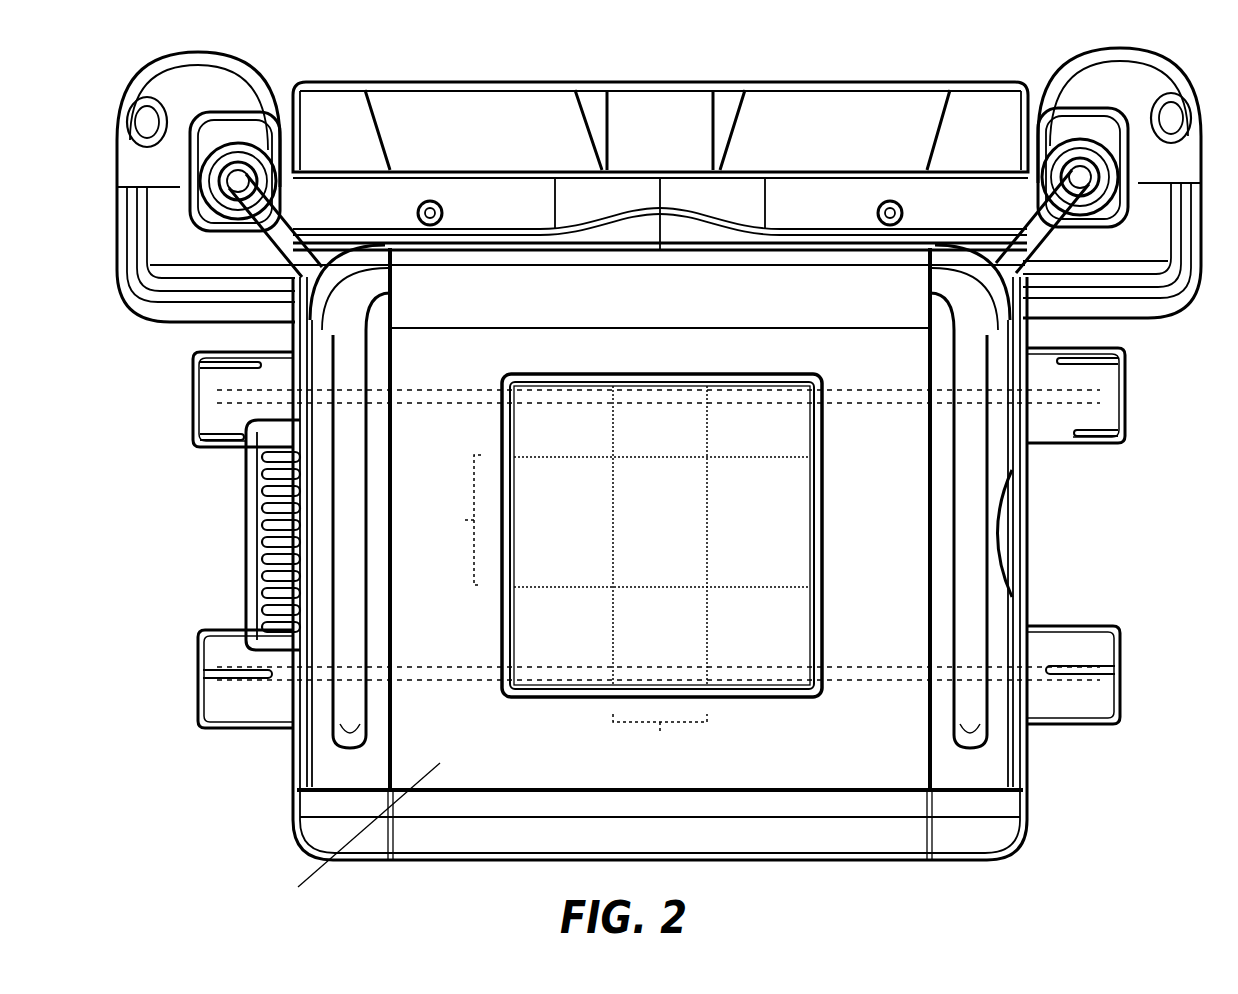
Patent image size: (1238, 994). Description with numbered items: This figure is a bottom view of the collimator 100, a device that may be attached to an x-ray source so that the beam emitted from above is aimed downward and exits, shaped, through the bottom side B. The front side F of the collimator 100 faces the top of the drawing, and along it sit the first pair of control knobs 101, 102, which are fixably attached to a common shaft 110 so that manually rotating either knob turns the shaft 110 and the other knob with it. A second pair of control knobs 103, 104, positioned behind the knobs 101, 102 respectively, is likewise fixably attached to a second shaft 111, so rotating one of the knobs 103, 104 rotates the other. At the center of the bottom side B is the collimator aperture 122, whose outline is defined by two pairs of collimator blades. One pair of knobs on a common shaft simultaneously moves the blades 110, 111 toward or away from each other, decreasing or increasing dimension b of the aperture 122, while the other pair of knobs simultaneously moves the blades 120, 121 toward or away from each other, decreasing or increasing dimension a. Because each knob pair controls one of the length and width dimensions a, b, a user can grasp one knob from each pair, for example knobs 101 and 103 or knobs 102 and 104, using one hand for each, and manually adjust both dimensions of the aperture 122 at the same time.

The collimator 100 is at (262, 800).
The control knob 101 is at (185, 370).
The control knob 102 is at (1136, 421).
The control knob 103 is at (207, 611).
The control knob 104 is at (1052, 610).
The shaft / collimator blade 110 is at (439, 414).
The second shaft / collimator blade 111 is at (460, 658).
The collimator blade 120 is at (808, 437).
The collimator blade 121 is at (808, 625).
The collimator aperture 122 is at (722, 529).
The front side F is at (713, 66).
The bottom side B is at (361, 834).
The length or width dimension a is at (460, 520).
The width or length dimension b is at (660, 740).